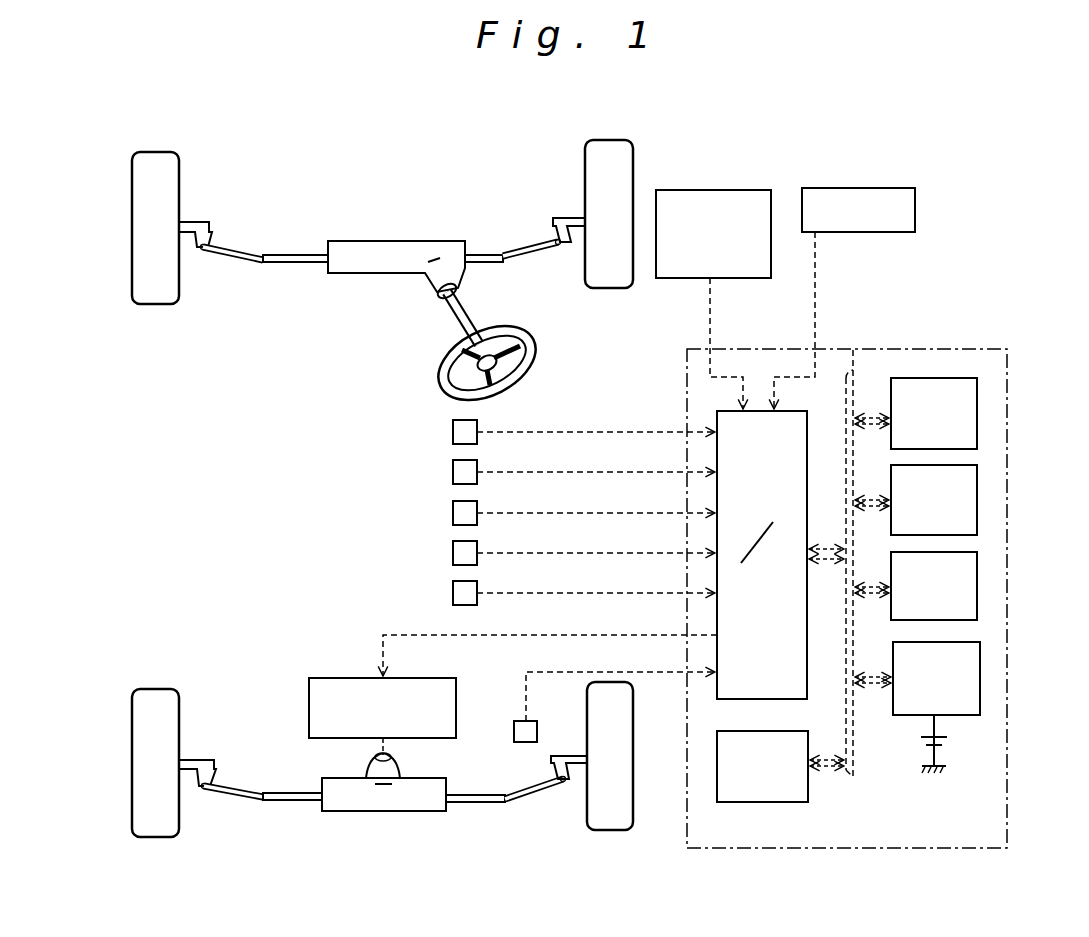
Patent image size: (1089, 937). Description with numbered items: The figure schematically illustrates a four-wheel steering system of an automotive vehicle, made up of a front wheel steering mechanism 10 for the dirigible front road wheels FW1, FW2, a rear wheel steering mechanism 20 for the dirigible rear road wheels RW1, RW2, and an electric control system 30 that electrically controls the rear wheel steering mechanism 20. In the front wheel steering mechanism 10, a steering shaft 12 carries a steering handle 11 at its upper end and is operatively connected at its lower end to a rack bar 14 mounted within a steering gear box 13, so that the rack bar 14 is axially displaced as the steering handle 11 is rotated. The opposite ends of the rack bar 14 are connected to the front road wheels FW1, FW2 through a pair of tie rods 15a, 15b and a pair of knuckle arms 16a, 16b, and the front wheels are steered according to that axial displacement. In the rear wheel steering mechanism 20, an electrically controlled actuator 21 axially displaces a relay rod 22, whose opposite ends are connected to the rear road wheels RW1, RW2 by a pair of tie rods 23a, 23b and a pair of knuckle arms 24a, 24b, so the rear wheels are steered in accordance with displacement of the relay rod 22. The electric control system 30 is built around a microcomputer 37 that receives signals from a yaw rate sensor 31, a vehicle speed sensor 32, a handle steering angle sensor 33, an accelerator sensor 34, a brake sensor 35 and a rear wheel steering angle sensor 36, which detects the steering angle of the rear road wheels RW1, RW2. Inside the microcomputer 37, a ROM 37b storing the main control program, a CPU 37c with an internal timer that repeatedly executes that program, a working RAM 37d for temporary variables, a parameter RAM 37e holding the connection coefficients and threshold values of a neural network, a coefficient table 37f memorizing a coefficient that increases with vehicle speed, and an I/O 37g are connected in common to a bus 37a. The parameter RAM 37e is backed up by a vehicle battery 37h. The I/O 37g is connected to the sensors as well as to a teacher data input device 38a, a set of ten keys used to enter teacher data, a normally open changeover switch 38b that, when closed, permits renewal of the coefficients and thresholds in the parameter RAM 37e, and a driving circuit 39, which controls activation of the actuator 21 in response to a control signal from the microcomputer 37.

The front road wheel FW1 is at (160, 152).
The front road wheel FW2 is at (604, 140).
The rear road wheel RW1 is at (156, 837).
The rear road wheel RW2 is at (614, 832).
The front wheel steering mechanism 10 is at (382, 296).
The steering handle 11 is at (520, 338).
The steering shaft 12 is at (466, 310).
The steering gear box 13 is at (435, 241).
The rack bar 14 is at (303, 255).
The tie rod 15a is at (243, 255).
The tie rod 15b is at (503, 255).
The knuckle arm 16a is at (197, 223).
The knuckle arm 16b is at (572, 219).
The rear wheel steering mechanism 20 is at (383, 764).
The electrically controlled actuator 21 is at (385, 812).
The relay rod 22 is at (309, 793).
The tie rod 23a is at (244, 797).
The tie rod 23b is at (523, 800).
The knuckle arm 24a is at (195, 787).
The knuckle arm 24b is at (571, 780).
The electric control system 30 is at (852, 544).
The yaw rate sensor 31 is at (453, 434).
The vehicle speed sensor 32 is at (453, 474).
The handle steering angle sensor 33 is at (453, 515).
The accelerator sensor 34 is at (453, 555).
The brake sensor 35 is at (453, 595).
The rear wheel steering angle sensor 36 is at (514, 730).
The microcomputer 37 is at (852, 575).
The bus 37a is at (853, 350).
The ROM 37b is at (977, 420).
The CPU 37c is at (977, 500).
The working RAM 37d is at (977, 588).
The parameter RAM 37e is at (980, 680).
The coefficient table 37f is at (717, 767).
The I/O 37g is at (713, 416).
The vehicle battery 37h is at (977, 742).
The teacher data input device 38a is at (697, 190).
The changeover switch 38b is at (838, 188).
The driving circuit 39 is at (310, 700).